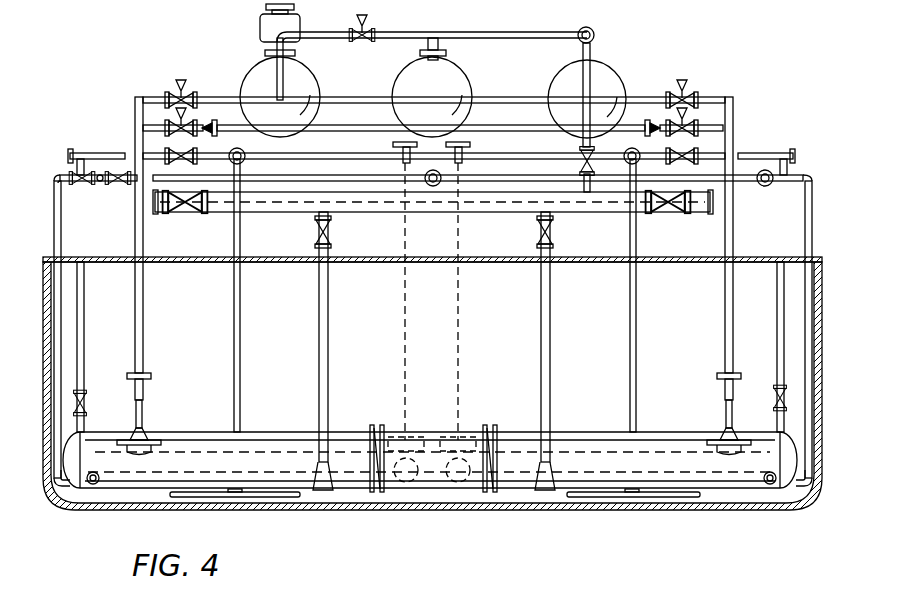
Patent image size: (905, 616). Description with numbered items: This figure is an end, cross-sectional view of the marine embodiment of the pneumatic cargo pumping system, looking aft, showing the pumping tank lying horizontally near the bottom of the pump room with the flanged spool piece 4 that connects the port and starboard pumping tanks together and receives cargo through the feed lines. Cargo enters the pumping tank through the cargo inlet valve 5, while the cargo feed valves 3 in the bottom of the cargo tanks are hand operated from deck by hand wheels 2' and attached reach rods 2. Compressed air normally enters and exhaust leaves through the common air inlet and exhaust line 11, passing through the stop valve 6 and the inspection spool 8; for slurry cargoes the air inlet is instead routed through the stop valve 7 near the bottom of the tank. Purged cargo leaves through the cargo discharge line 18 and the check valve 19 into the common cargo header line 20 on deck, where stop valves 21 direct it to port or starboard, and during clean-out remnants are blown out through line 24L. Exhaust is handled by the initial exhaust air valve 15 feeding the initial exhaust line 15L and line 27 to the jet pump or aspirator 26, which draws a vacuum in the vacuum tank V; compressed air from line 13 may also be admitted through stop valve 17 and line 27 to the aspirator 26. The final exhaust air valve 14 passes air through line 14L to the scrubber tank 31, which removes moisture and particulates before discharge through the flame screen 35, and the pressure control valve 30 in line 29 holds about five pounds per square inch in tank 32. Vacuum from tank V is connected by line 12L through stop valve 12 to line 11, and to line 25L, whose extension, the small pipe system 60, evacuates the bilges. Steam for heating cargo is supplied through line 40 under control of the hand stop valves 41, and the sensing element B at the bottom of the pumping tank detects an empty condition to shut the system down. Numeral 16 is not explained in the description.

The reach rod 2 is at (430, 301).
The hand wheel 2' is at (434, 148).
The cargo feed valve 3 is at (402, 436).
The flanged spool piece 4 is at (150, 490).
The cargo inlet valve 5 is at (376, 494).
The stop valve 6 is at (115, 187).
The stop valve 7 is at (70, 176).
The inspection spool 8 is at (144, 394).
The common air inlet and exhaust line 11 is at (144, 334).
The stop valve 12 is at (166, 154).
The line 12L is at (306, 157).
The line 13 is at (800, 178).
The final exhaust air valve 14 is at (181, 88).
The line 14L is at (485, 100).
The initial exhaust air valve 15 is at (166, 126).
The initial exhaust line 15L is at (482, 128).
The check valve 16 is at (236, 114).
The stop valve 17 is at (578, 160).
The cargo discharge line 18 is at (318, 392).
The check valve 19 is at (318, 240).
The common cargo header line 20 is at (468, 213).
The stop valve 21 is at (192, 215).
The line 24L is at (318, 293).
The line 25L is at (242, 318).
The jet pump or aspirator 26 is at (594, 30).
The line 27 is at (592, 60).
The line 29 is at (480, 32).
The pressure control valve 30 is at (366, 21).
The scrubber tank 31 is at (258, 80).
The tank 32 is at (400, 85).
The flame screen 35 is at (260, 28).
The line 40 is at (120, 152).
The hand stop valve 41 is at (72, 402).
The small pipe system 60 is at (290, 498).
The sensing element B is at (90, 484).
The vacuum tank V is at (620, 88).